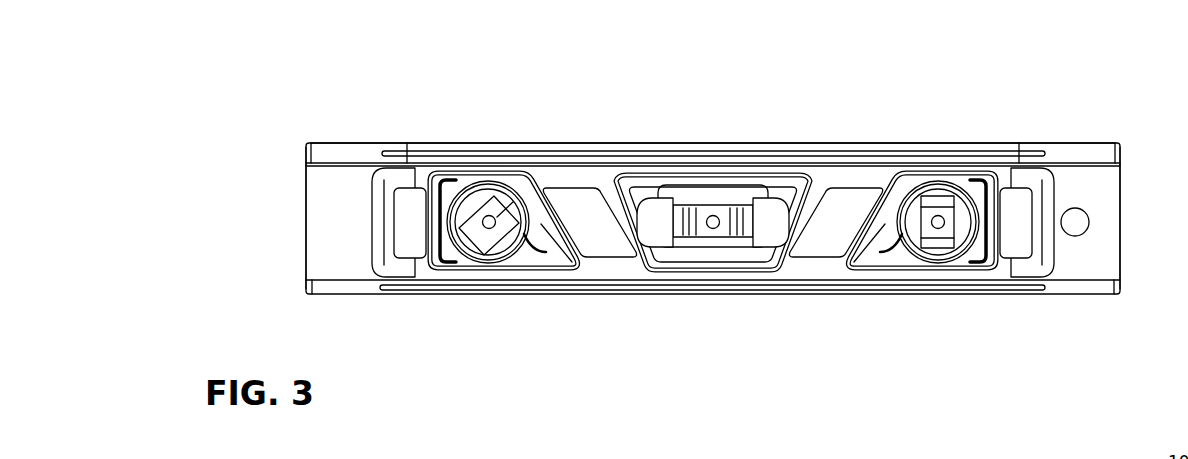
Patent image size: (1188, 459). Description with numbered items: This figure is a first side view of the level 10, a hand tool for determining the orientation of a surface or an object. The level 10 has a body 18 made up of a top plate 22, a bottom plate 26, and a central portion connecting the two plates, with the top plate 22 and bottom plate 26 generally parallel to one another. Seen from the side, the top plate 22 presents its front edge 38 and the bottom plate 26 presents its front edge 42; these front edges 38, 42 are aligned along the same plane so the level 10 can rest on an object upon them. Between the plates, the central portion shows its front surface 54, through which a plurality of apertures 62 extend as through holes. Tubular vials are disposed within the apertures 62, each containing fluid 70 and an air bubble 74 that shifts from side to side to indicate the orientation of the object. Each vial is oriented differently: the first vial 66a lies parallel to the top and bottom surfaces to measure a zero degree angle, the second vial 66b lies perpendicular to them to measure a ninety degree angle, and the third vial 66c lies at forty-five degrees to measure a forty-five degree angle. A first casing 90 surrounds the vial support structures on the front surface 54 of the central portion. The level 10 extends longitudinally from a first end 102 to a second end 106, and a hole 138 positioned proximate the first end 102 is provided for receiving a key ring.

The level 10 is at (1078, 99).
The body 18 is at (320, 180).
The top plate 22 is at (327, 147).
The bottom plate 26 is at (352, 292).
The front edge 38 is at (502, 150).
The front edge 42 is at (808, 285).
The front surface 54 is at (327, 230).
The apertures 62 is at (472, 194).
The first vial 66a is at (746, 218).
The second vial 66b is at (940, 195).
The third vial 66c is at (531, 192).
The fluid 70 is at (475, 248).
The air bubble 74 is at (493, 227).
The first casing 90 is at (405, 246).
The first end 102 is at (349, 116).
The second end 106 is at (1057, 307).
The hole 138 is at (1077, 228).